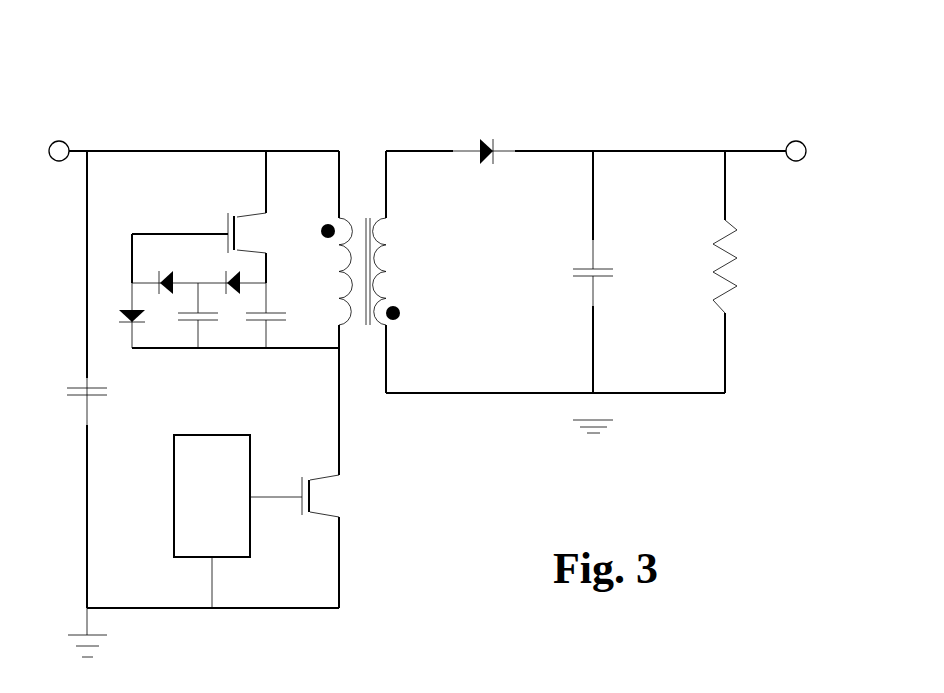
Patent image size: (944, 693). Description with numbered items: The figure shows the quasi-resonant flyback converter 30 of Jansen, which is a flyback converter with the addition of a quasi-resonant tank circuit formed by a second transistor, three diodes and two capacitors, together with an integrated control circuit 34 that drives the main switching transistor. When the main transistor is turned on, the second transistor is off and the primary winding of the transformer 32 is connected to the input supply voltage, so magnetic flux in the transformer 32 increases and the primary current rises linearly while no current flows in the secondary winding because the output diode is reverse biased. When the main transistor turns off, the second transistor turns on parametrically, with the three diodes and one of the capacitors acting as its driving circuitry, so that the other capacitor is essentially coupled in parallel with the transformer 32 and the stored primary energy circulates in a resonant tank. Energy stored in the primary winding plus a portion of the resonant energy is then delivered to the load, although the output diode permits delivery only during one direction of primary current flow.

The quasi-resonant flyback converter 30 is at (699, 76).
The transformer 32 is at (358, 203).
The controller IC 34 is at (232, 435).